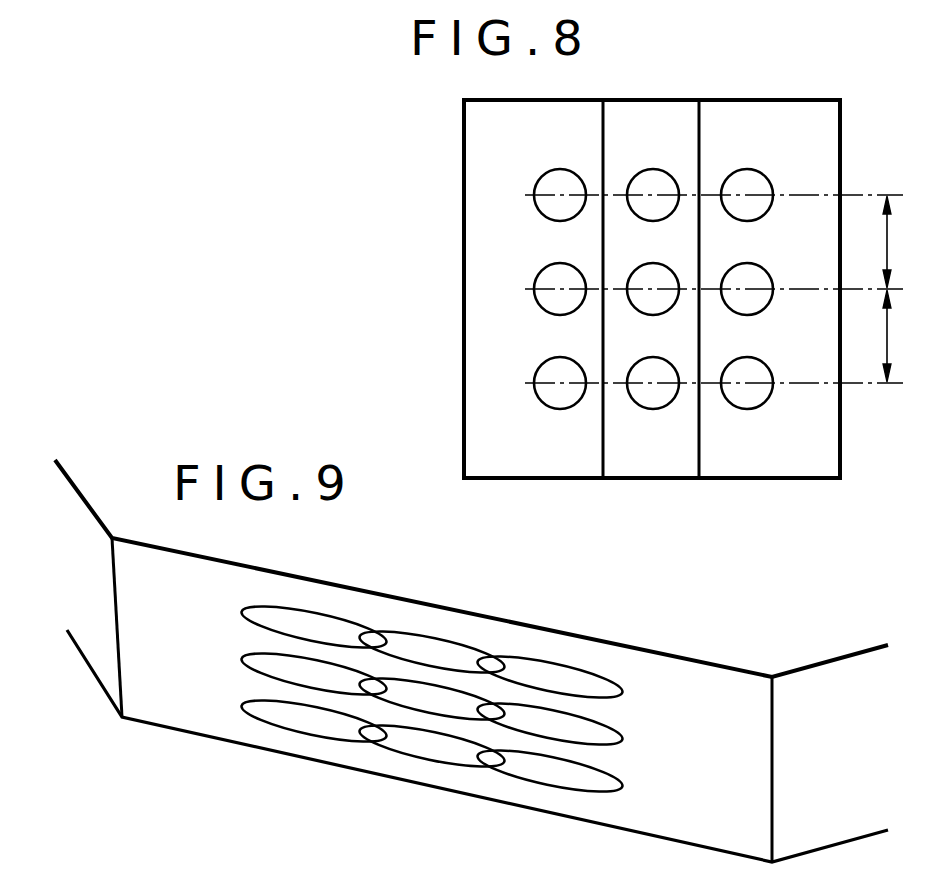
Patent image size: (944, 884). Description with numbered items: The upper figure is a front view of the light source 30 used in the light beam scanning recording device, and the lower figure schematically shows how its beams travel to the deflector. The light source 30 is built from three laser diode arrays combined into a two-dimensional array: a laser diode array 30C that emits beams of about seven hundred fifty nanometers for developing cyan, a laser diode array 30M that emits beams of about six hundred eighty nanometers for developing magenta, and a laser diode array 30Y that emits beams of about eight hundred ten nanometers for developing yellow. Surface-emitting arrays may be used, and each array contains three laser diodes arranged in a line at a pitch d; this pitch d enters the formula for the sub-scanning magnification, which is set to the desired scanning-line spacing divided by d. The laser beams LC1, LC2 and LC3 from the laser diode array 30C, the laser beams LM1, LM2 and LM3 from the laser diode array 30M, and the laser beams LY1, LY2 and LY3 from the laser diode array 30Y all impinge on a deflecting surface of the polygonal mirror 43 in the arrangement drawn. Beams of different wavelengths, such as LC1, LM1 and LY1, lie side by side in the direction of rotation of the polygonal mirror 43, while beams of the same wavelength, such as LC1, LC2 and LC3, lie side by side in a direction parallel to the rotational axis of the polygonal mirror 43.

In FIG. 8, the light source 30 is at (656, 88).
In FIG. 8, the laser diode array 30C is at (548, 458).
In FIG. 8, the laser diode array 30M is at (661, 458).
In FIG. 8, the laser diode array 30Y is at (778, 458).
In FIG. 8, the pitch between the laser diodes d is at (716, 289).
In FIG. 9, the polygonal mirror 43 is at (306, 762).
In FIG. 9, the laser beam LC1 is at (245, 703).
In FIG. 9, the laser beam LC2 is at (243, 657).
In FIG. 9, the laser beam LC3 is at (243, 607).
In FIG. 9, the laser beam LM1 is at (438, 762).
In FIG. 9, the laser beam LM2 is at (433, 685).
In FIG. 9, the laser beam LM3 is at (424, 632).
In FIG. 9, the laser beam LY1 is at (624, 785).
In FIG. 9, the laser beam LY2 is at (624, 738).
In FIG. 9, the laser beam LY3 is at (624, 690).